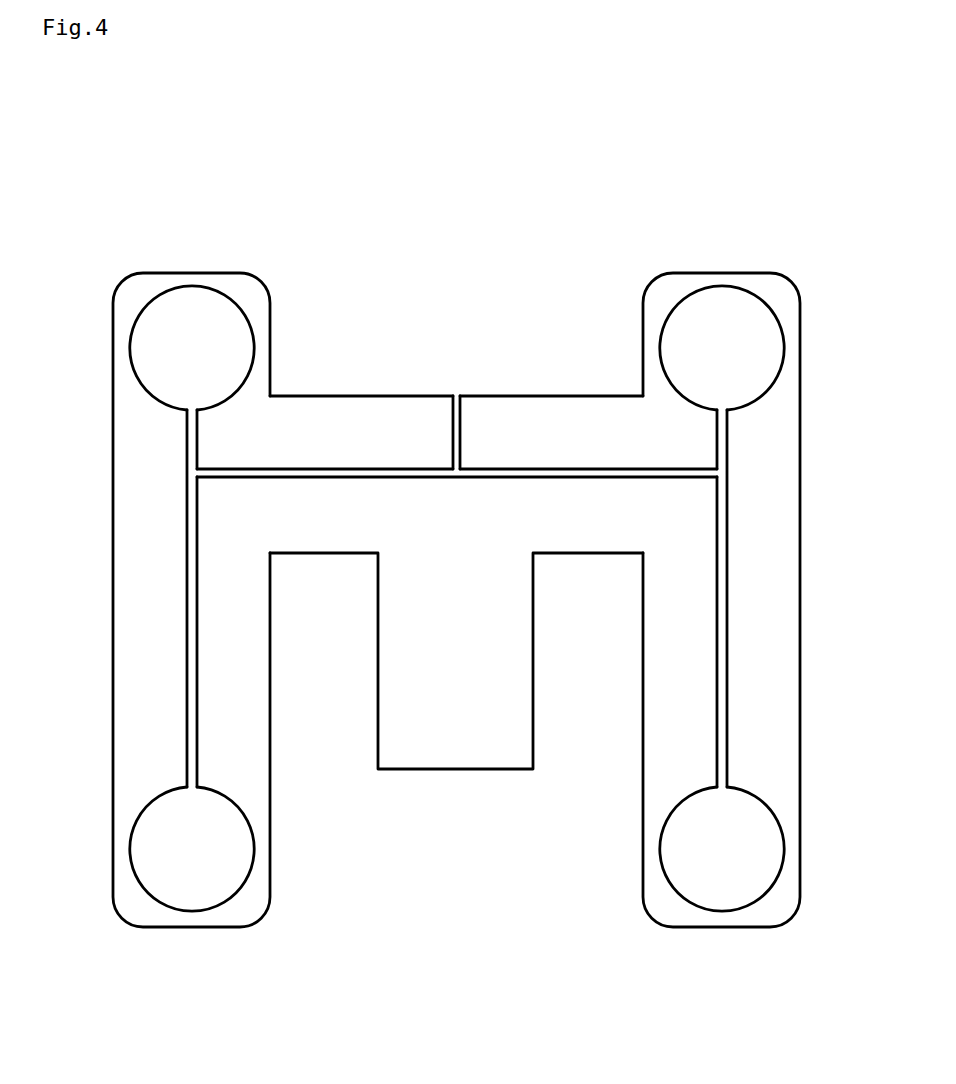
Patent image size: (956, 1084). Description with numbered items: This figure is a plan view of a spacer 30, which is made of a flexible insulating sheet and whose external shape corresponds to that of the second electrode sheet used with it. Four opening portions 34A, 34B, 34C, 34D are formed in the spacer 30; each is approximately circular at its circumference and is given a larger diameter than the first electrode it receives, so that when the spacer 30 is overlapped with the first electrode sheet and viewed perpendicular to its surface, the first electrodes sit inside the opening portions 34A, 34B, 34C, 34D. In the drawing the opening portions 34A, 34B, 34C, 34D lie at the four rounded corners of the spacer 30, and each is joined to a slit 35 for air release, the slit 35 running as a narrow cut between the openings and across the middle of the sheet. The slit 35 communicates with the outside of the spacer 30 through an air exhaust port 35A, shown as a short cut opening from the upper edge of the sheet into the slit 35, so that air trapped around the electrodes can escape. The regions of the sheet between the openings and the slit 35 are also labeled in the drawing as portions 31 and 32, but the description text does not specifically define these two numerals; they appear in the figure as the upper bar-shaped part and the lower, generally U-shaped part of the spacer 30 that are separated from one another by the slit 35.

The spacer 30 is at (692, 223).
The first connecting portion 31 is at (347, 413).
The second connecting portion 32 is at (520, 725).
The opening portion 34A is at (192, 873).
The opening portion 34B is at (215, 325).
The opening portion 34C is at (713, 872).
The opening portion 34D is at (753, 340).
The slit 35 is at (532, 473).
The air exhaust port 35A is at (460, 391).